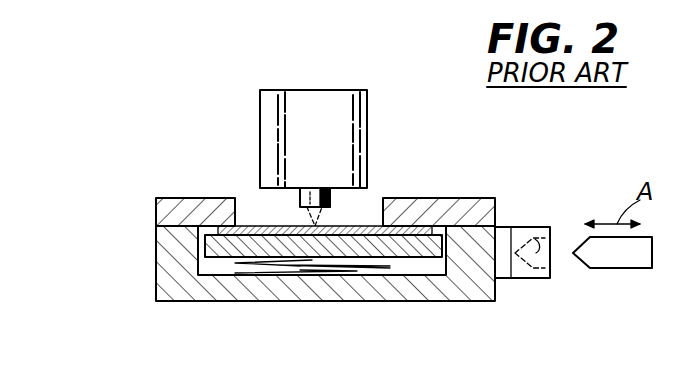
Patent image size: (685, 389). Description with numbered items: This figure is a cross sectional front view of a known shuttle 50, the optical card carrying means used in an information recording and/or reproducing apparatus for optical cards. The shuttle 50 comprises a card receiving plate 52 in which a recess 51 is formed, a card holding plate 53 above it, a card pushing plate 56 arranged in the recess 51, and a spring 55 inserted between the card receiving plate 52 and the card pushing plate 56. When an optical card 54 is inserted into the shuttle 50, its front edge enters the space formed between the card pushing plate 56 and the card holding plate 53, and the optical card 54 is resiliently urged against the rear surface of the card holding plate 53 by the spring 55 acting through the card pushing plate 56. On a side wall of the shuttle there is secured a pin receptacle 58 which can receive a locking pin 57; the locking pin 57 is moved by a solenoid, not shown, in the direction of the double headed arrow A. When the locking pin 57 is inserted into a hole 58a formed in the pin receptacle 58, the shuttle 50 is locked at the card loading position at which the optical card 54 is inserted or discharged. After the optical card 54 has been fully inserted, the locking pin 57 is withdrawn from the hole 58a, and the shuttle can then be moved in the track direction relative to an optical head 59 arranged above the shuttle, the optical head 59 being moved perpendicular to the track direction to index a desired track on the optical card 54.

The shuttle 50 is at (286, 246).
The recess 51 is at (431, 263).
The card receiving plate 52 is at (332, 302).
The card holding plate 53 is at (170, 198).
The optical card 54 is at (252, 226).
The spring 55 is at (250, 263).
The card pushing plate 56 is at (352, 230).
The locking pin 57 is at (618, 268).
The pin receptacle 58 is at (543, 251).
The hole 58a is at (537, 250).
The optical head 59 is at (260, 113).